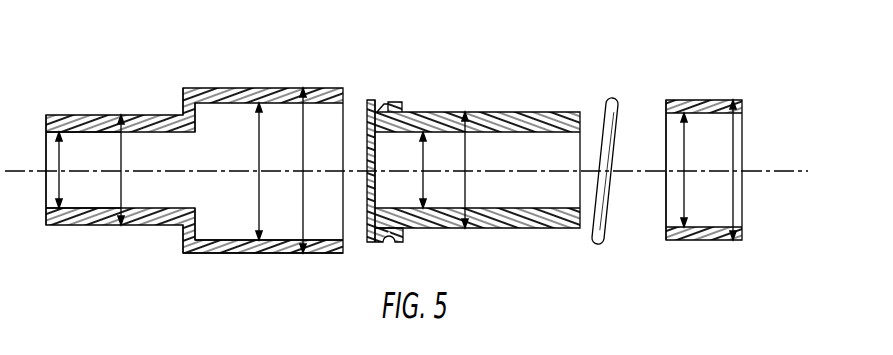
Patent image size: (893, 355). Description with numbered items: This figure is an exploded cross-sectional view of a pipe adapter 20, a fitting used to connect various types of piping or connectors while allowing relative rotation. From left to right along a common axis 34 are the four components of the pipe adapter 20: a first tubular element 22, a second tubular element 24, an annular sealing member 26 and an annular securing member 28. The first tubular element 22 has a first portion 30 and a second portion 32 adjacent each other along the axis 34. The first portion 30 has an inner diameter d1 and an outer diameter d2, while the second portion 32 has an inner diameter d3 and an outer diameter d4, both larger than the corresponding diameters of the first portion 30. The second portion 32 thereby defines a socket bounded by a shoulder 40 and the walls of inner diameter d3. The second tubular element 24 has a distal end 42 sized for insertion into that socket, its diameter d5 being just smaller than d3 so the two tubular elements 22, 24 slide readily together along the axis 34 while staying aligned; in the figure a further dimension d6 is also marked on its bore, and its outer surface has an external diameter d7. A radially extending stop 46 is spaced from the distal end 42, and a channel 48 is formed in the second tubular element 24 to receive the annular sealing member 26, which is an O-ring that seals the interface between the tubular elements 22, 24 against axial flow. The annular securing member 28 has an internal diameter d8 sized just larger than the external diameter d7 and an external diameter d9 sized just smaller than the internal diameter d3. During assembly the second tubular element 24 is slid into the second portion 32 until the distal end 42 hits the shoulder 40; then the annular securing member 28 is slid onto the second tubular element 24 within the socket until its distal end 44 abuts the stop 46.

The pipe adapter 20 is at (548, 71).
The first tubular element 22 is at (162, 115).
The second tubular element 24 is at (482, 112).
The annular sealing member 26 is at (613, 103).
The annular securing member 28 is at (700, 100).
The first portion 30 is at (57, 226).
The second portion 32 is at (223, 254).
The axis 34 is at (780, 171).
The shoulder 40 is at (203, 121).
The distal end 42 is at (366, 120).
The distal end 44 is at (666, 100).
The stop 46 is at (402, 108).
The channel 48 is at (384, 108).
The inner diameter d1 is at (61, 146).
The outer diameter d2 is at (122, 146).
The inner diameter d3 is at (261, 146).
The outer diameter d4 is at (305, 146).
The diameter d5 is at (377, 150).
The sixth diameter d6 is at (425, 152).
The external diameter d7 is at (466, 150).
The internal diameter d8 is at (686, 152).
The external diameter d9 is at (735, 158).